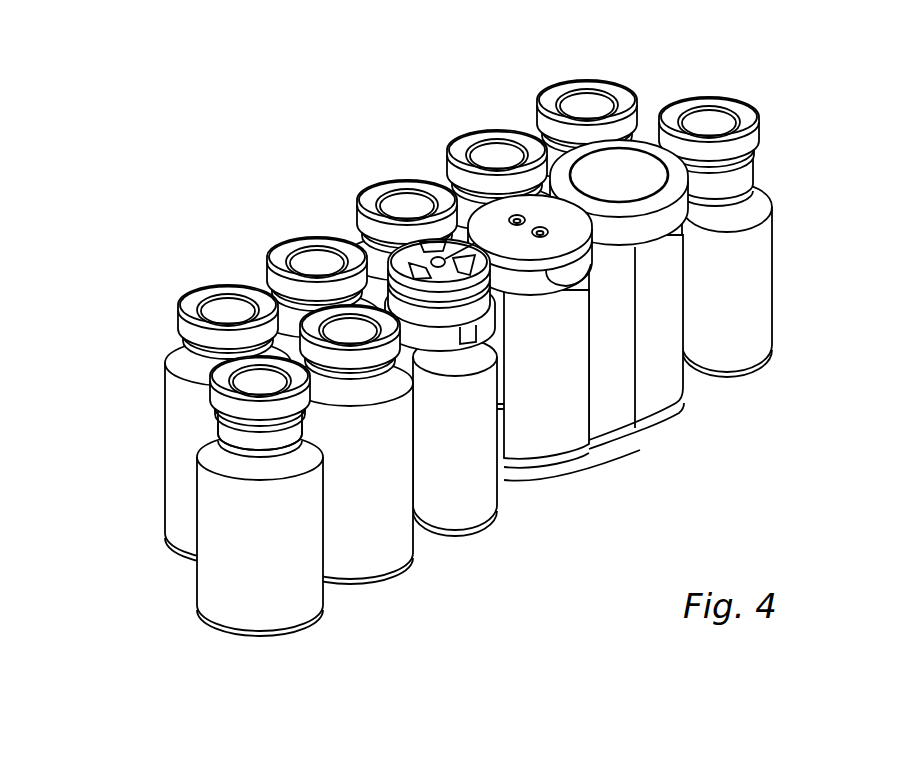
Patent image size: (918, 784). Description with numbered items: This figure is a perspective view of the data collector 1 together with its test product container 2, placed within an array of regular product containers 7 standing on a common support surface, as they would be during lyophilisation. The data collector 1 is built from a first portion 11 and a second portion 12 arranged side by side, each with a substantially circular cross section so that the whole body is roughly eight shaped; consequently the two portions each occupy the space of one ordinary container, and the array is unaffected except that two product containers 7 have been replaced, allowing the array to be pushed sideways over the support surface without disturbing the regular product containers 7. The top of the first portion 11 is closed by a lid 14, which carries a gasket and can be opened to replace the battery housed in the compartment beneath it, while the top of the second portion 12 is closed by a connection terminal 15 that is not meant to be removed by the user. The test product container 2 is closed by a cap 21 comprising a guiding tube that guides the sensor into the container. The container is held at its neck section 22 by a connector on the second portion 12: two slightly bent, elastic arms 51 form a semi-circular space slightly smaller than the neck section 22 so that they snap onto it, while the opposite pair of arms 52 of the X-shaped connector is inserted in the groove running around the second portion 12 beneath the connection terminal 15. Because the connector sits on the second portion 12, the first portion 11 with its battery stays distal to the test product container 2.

The data collector 1 is at (605, 450).
The test product container 2 is at (460, 503).
The product containers 7 is at (177, 317).
The first portion 11 is at (657, 378).
The second portion 12 is at (552, 431).
The lid 14 is at (595, 163).
The connection terminal 15 is at (500, 211).
The cap 21 is at (413, 253).
The neck section 22 is at (227, 436).
The arms 51 is at (478, 335).
The pair of arms 52 is at (567, 295).